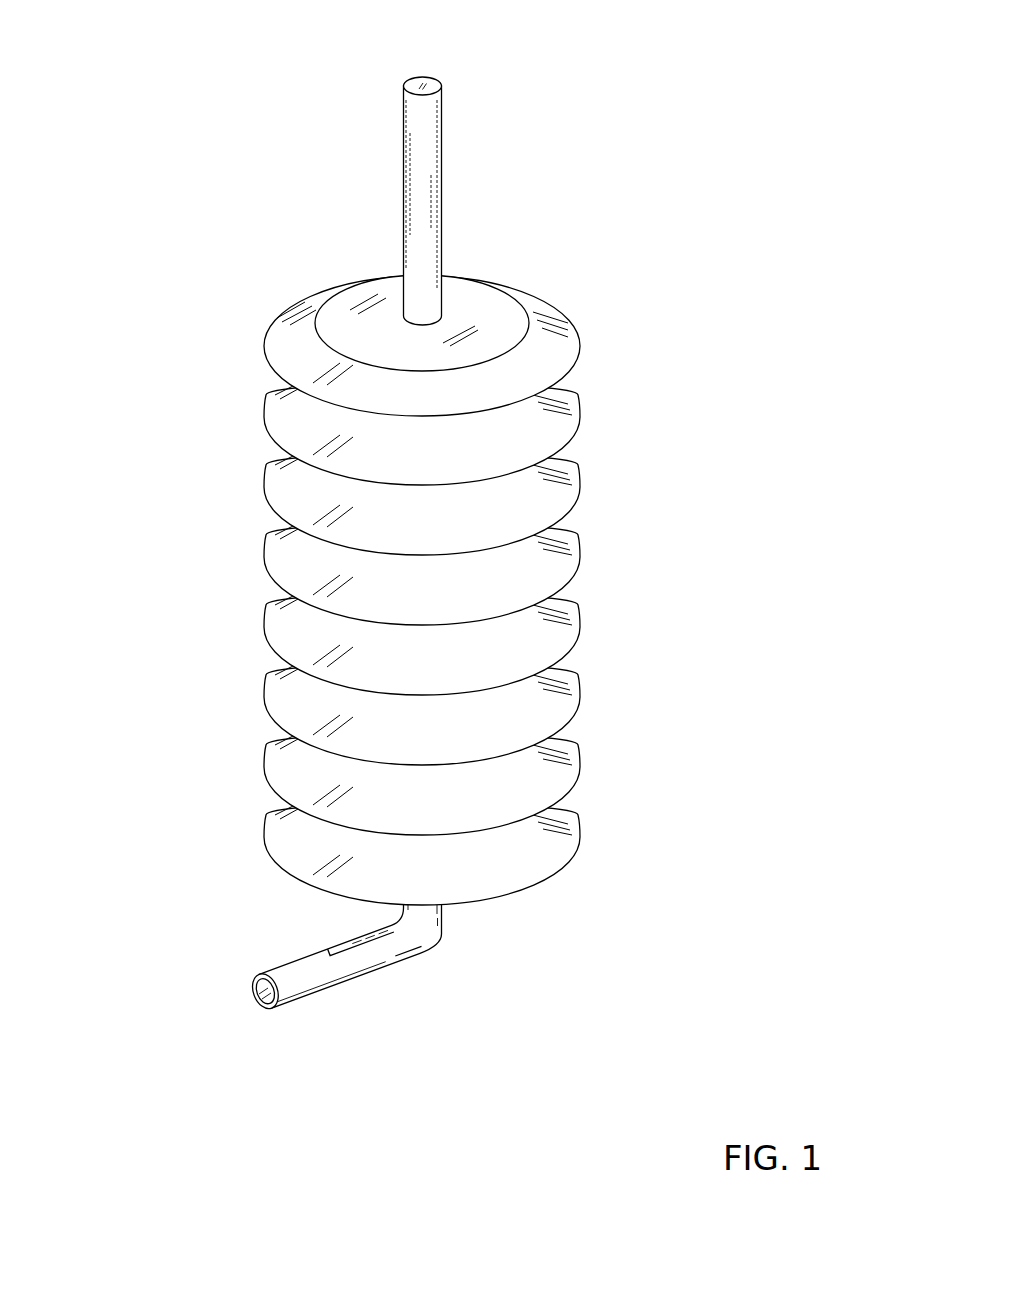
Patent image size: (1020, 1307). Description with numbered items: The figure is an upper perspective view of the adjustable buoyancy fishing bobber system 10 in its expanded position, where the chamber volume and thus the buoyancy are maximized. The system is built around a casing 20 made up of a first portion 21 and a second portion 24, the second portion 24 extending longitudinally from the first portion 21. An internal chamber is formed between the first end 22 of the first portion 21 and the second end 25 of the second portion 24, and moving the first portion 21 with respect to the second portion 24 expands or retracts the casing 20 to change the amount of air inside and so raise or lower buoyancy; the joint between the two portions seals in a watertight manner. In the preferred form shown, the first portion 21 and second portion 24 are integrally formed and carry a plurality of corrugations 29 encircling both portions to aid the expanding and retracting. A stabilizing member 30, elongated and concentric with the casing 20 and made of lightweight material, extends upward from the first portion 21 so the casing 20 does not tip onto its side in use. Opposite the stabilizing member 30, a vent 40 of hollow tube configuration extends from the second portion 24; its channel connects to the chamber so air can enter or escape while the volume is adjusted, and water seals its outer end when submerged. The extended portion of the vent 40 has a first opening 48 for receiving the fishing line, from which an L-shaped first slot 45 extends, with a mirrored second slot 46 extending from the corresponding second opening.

The adjustable buoyancy fishing bobber system 10 is at (626, 73).
The casing 20 is at (251, 480).
The first portion 21 is at (572, 415).
The first end 22 is at (510, 310).
The second portion 24 is at (572, 752).
The second end 25 is at (520, 890).
The corrugations 29 is at (272, 606).
The stabilizing member 30 is at (437, 192).
The vent 40 is at (420, 955).
The first slot 45 is at (330, 985).
The second slot 46 is at (261, 995).
The first opening 48 is at (333, 953).